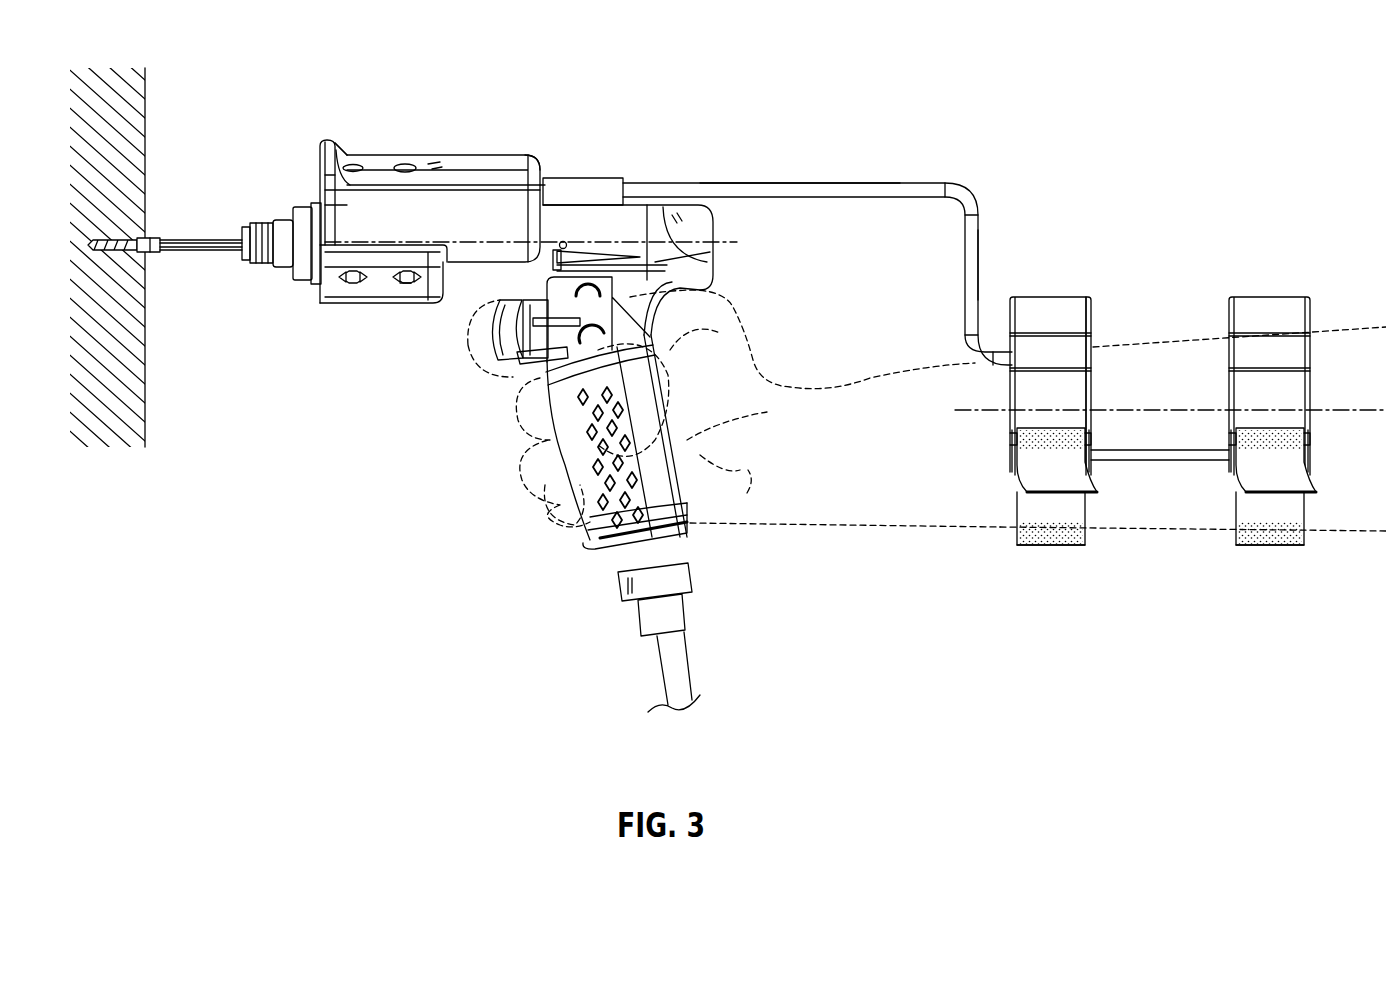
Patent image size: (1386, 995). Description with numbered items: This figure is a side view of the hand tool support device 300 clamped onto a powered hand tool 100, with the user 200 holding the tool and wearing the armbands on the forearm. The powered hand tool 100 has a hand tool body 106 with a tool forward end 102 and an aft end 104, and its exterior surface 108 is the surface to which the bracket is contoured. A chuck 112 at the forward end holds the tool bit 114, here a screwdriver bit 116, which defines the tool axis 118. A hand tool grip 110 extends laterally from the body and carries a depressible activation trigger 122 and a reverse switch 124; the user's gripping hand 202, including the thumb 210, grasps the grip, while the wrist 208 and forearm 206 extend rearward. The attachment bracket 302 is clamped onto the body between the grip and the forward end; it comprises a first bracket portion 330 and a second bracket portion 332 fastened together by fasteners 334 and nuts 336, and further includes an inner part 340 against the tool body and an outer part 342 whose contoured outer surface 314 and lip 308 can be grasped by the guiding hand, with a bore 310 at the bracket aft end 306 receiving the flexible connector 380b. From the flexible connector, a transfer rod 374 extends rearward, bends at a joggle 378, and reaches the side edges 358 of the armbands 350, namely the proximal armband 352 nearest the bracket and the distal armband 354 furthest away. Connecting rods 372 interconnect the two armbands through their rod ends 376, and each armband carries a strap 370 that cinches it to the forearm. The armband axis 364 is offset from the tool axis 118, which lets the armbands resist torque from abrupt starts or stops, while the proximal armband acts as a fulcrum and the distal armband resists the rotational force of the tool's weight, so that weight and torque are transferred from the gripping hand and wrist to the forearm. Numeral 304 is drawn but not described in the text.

The powered hand tool 100 is at (598, 567).
The tool forward end 102 is at (260, 265).
The aft end 104 is at (715, 273).
The hand tool body 106 is at (700, 228).
The exterior surface 108 is at (673, 214).
The hand tool grip 110 is at (690, 485).
The chuck 112 is at (246, 228).
The tool bit 114 is at (178, 254).
The screwdriver bit 116 is at (160, 240).
The tool axis 118 is at (716, 250).
The activation trigger 122 is at (498, 310).
The reverse switch 124 is at (540, 366).
The user 200 is at (1346, 324).
The gripping hand 202 is at (755, 362).
The forearm 206 is at (1153, 531).
The wrist 208 is at (820, 530).
The thumb 210 is at (722, 333).
The hand tool support device 300 is at (880, 180).
The attachment bracket 302 is at (463, 147).
The housing front 304 is at (333, 146).
The bracket aft end 306 is at (538, 174).
The lip 308 is at (331, 139).
The bores 310 is at (548, 181).
The outer surface 314 is at (436, 160).
The first bracket portion 330 is at (369, 145).
The second bracket portion 332 is at (332, 305).
The fasteners 334 is at (405, 284).
The nuts 336 is at (407, 290).
The inner part 340 is at (333, 206).
The outer part 342 is at (323, 176).
The armbands 350 is at (1161, 385).
The proximal armband 352 is at (1052, 296).
The distal armband 354 is at (1262, 296).
The side edges 358 is at (1093, 318).
The armband axis 364 is at (1355, 412).
The strap 370 is at (1045, 546).
The connecting rods 372 is at (1152, 449).
The transfer rods 374 is at (804, 182).
The rod ends 376 is at (1010, 345).
The joggle 378 is at (980, 222).
The flexible connector 380b is at (606, 177).